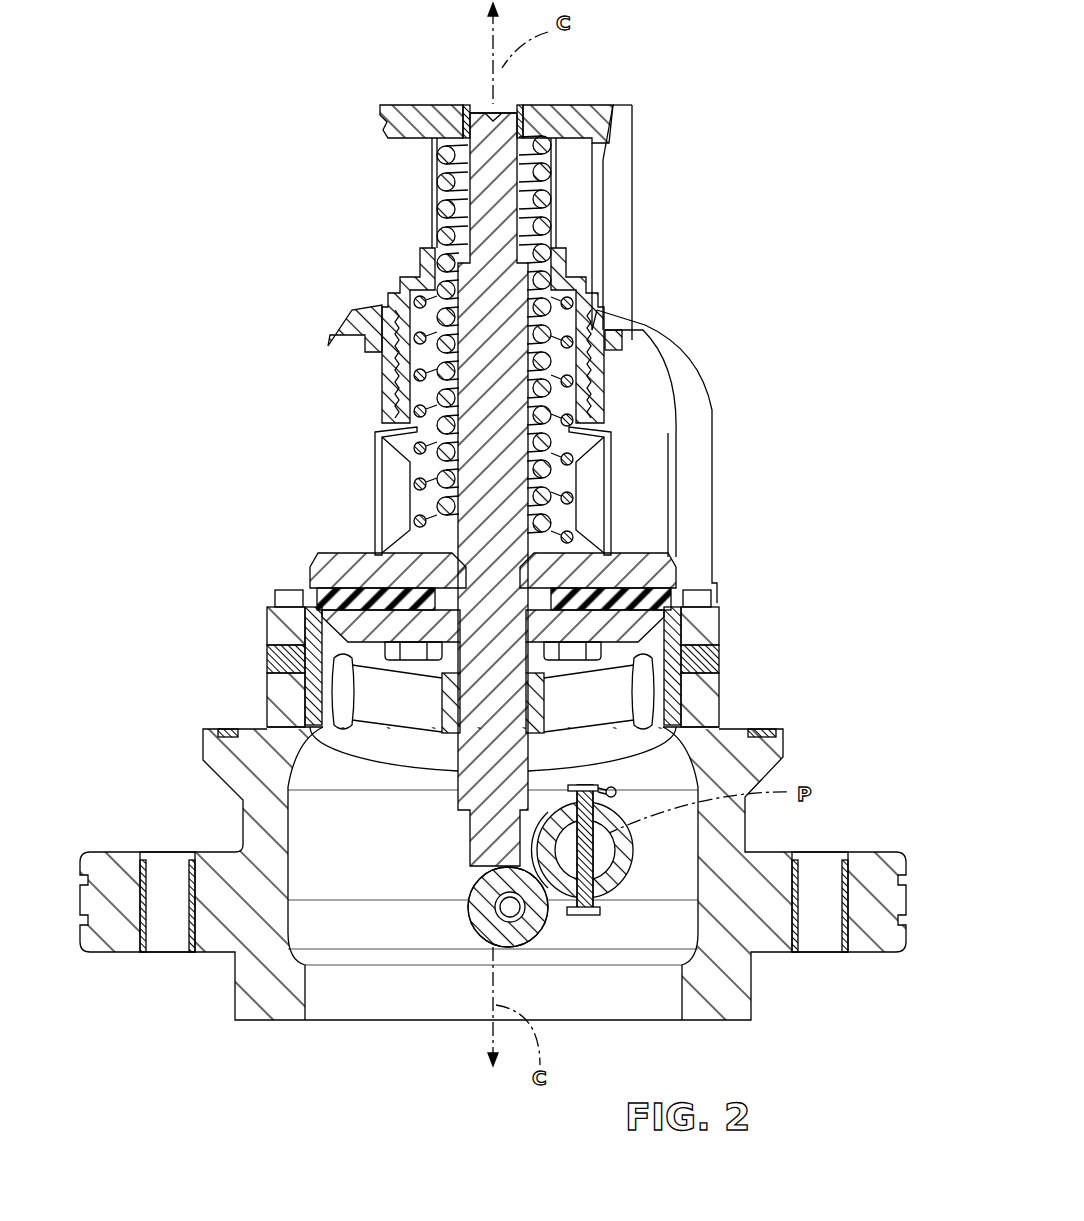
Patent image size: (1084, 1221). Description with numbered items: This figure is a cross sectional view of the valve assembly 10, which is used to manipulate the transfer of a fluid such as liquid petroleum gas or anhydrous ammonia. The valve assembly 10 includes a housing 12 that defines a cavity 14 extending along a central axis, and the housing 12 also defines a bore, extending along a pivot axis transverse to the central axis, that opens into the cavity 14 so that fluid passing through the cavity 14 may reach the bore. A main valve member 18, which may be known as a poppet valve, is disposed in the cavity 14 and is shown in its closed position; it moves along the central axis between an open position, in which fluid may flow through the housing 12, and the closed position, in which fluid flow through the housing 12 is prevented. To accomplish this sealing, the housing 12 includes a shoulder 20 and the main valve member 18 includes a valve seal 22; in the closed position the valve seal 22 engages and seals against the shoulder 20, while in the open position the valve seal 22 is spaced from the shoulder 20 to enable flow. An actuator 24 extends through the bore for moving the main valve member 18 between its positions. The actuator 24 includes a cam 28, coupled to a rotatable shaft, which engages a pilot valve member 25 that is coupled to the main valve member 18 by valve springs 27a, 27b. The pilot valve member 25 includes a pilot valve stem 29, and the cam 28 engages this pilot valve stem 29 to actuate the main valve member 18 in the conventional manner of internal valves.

The valve assembly 10 is at (724, 84).
The housing 12 is at (227, 767).
The cavity 14 is at (652, 763).
The main valve member 18 is at (332, 568).
The shoulder 20 is at (673, 631).
The valve seal 22 is at (657, 583).
The actuator 24 is at (637, 872).
The pilot valve member 25 is at (585, 538).
The valve spring 27a is at (548, 205).
The valve spring 27b is at (572, 330).
The cam 28 is at (533, 928).
The pilot valve stem 29 is at (307, 733).